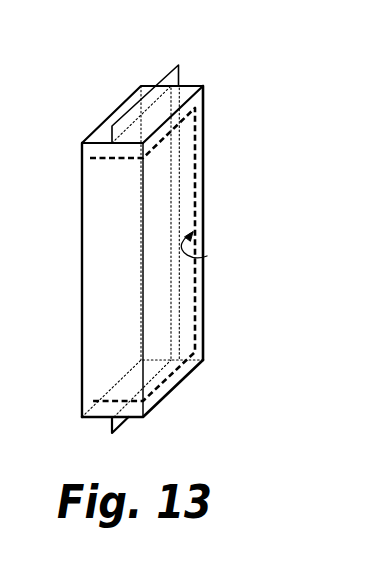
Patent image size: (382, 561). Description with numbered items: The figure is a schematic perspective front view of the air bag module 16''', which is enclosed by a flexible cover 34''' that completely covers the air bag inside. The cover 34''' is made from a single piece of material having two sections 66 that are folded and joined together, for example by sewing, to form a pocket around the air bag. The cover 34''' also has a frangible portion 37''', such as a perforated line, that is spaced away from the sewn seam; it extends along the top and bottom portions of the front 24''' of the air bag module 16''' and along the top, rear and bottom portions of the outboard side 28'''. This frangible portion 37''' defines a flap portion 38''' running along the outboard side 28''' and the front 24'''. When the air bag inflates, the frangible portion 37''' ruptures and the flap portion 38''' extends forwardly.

The air bag module 16''' is at (170, 249).
The front 24''' is at (87, 280).
The outboard side 28''' is at (211, 223).
The cover 34''' is at (196, 216).
The frangible portion 37''' is at (196, 254).
The flap portion 38''' is at (173, 388).
The sections 66 is at (122, 107).